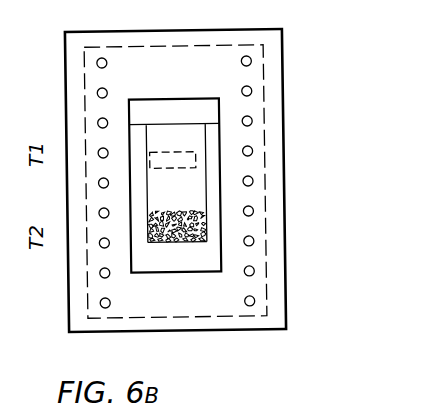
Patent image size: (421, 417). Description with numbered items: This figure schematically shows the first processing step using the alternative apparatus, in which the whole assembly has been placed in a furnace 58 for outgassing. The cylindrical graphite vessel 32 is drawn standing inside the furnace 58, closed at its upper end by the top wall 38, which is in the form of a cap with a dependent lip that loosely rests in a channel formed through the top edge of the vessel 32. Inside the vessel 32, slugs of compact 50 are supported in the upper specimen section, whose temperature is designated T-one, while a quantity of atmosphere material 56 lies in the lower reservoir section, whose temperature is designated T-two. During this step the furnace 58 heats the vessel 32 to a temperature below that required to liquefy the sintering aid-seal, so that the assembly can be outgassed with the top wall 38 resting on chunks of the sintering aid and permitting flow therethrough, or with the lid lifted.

The cylindrical graphite vessel 32 is at (213, 185).
The top wall 38 is at (203, 99).
The compact 50 is at (197, 155).
The atmosphere material 56 is at (203, 219).
The furnace 58 is at (285, 290).